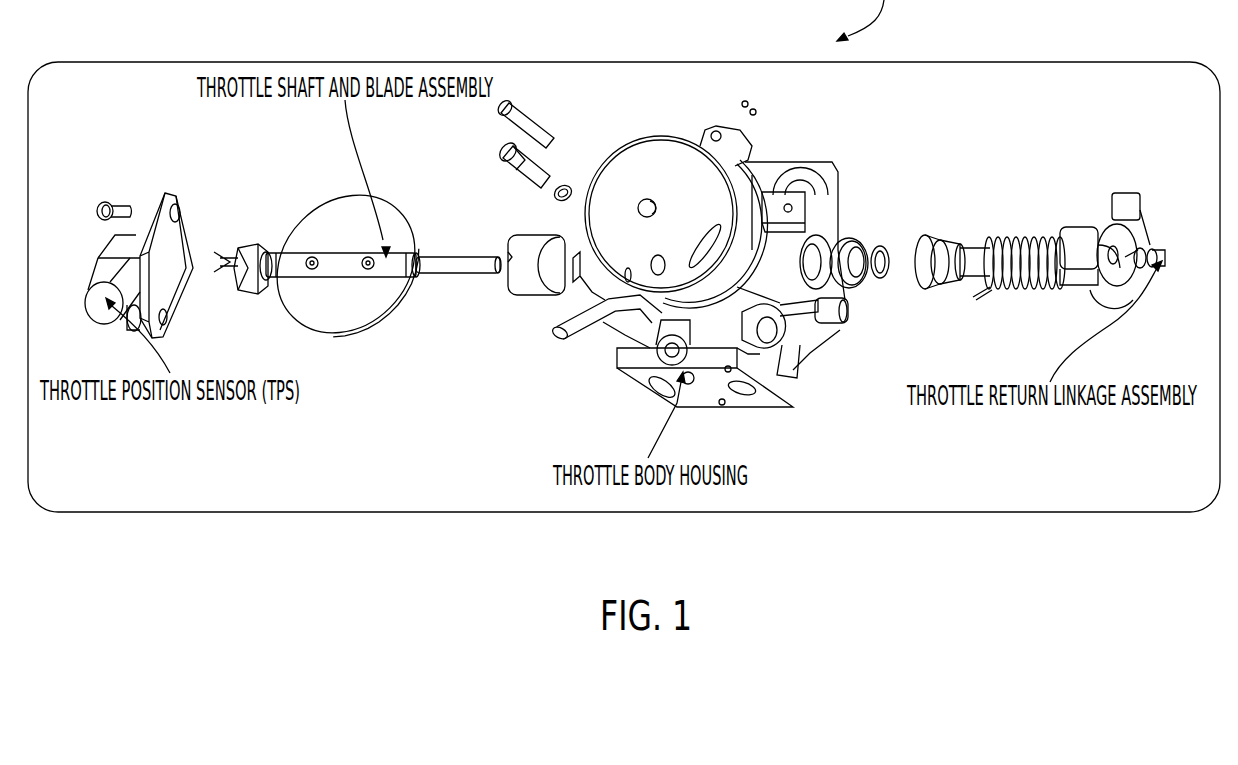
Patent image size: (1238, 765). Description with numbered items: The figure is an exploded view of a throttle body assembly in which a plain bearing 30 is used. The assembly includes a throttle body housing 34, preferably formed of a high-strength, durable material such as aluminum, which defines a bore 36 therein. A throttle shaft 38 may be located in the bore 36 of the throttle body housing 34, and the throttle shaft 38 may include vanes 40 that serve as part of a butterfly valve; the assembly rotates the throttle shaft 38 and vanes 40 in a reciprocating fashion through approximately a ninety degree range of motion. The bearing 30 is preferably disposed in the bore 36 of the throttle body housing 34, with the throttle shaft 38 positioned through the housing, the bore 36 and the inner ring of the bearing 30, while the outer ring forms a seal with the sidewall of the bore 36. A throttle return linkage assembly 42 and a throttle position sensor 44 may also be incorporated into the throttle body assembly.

The bearing 30 is at (888, 250).
The throttle body housing 34 is at (781, 162).
The bore 36 is at (836, 238).
The throttle shaft 38 is at (473, 276).
The vanes 40 is at (343, 217).
The throttle return linkage assembly 42 is at (1077, 212).
The throttle position sensor 44 is at (210, 192).